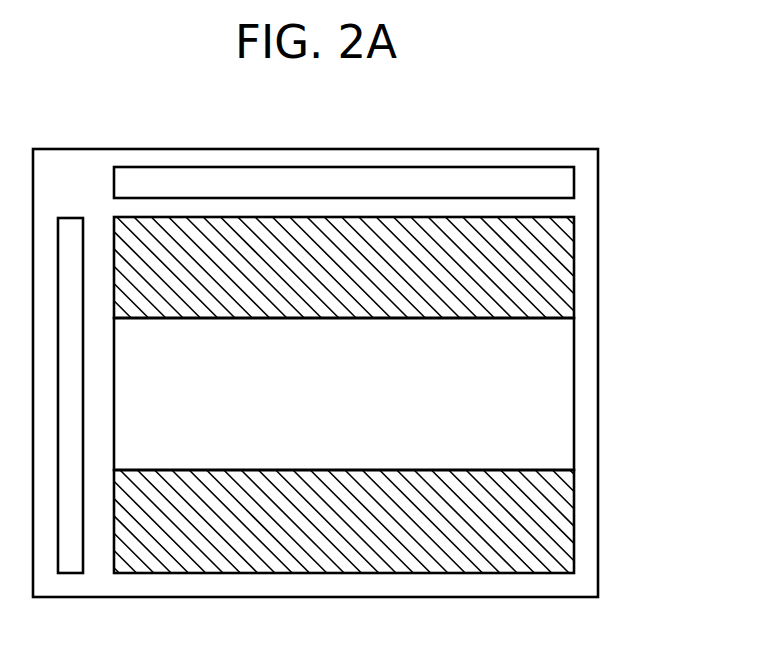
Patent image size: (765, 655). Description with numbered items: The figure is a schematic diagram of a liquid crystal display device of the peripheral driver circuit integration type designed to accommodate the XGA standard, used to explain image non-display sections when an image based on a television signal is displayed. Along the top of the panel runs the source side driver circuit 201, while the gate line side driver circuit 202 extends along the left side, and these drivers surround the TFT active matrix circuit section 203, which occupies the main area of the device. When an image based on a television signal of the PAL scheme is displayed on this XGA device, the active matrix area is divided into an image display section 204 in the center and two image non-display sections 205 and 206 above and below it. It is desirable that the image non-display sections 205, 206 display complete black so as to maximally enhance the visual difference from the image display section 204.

The source side driver circuit 201 is at (143, 183).
The gate line side driver circuit 202 is at (71, 557).
The TFT active matrix circuit section 203 is at (574, 395).
The image display section 204 is at (413, 402).
The image non-display section 205 is at (339, 282).
The image non-display section 206 is at (339, 531).